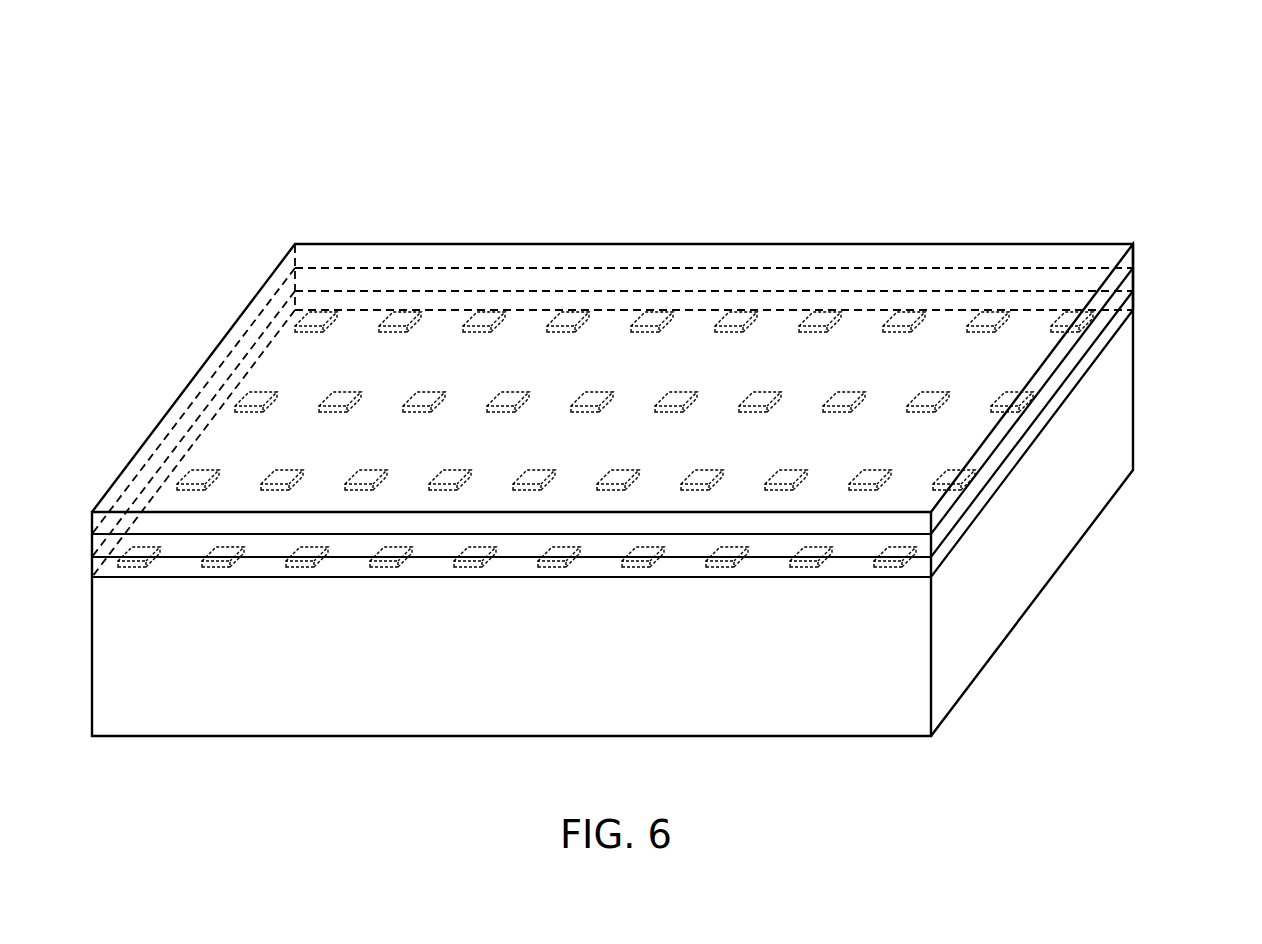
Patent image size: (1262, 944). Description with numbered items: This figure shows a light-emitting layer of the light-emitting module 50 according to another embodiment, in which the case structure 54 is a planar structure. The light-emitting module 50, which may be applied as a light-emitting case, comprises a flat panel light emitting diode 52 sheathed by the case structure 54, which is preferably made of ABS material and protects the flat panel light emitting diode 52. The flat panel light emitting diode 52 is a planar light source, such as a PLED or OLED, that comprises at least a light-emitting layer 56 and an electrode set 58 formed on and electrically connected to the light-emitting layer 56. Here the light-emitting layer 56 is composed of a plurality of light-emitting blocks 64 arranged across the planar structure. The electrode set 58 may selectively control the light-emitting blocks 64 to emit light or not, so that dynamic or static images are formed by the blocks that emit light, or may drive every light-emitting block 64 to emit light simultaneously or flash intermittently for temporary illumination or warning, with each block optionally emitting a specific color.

The light-emitting module 50 is at (968, 102).
The flat panel light emitting diode 52 is at (1200, 252).
The case structure 54 is at (1133, 254).
The light-emitting layer 56 is at (1133, 302).
The electrode set 58 is at (1133, 278).
The light-emitting blocks 64 is at (118, 563).